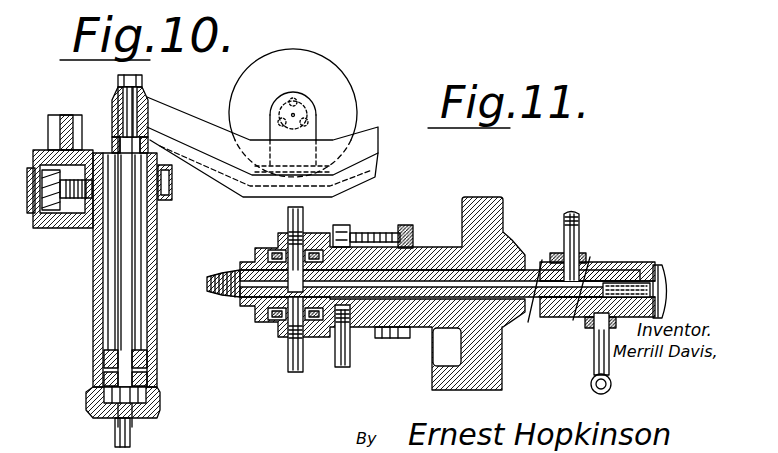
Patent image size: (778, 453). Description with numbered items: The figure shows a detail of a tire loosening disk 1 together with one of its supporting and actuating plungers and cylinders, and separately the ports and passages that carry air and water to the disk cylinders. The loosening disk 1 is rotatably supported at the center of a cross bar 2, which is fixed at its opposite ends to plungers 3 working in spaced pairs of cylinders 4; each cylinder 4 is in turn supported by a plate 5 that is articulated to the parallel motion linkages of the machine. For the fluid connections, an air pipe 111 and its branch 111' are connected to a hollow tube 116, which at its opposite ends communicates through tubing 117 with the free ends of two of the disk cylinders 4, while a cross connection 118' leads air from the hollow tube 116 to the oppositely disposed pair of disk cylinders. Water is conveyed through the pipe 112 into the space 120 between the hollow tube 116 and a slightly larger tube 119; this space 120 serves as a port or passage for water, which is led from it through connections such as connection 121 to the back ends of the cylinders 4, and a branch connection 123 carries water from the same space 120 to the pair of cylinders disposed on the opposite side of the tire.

In FIG. 10, the loosening disk 1 is at (327, 71).
In FIG. 10, the cross bar 2 is at (166, 110).
In FIG. 10, the plunger 3 is at (152, 339).
In FIG. 10, the cylinder 4 is at (158, 278).
In FIG. 10, the plate 5 is at (53, 128).
In FIG. 11, the plate 5 is at (463, 205).
In FIG. 10, the tubing 117 is at (131, 440).
In FIG. 11, the branch connection 123 is at (301, 217).
In FIG. 11, the pipe 112 is at (291, 357).
In FIG. 11, the connection 121 is at (351, 357).
In FIG. 11, the cross connection 118' is at (584, 242).
In FIG. 11, the hollow tube 116 is at (612, 290).
In FIG. 11, the larger tube 119 is at (645, 267).
In FIG. 11, the space 120 is at (670, 270).
In FIG. 11, the branch 111' is at (588, 344).
In FIG. 11, the pipe 111 is at (580, 390).